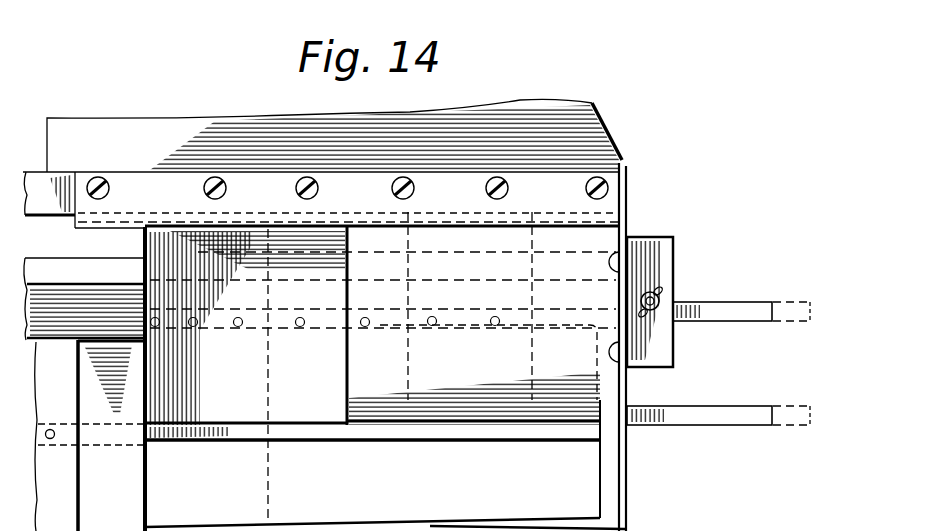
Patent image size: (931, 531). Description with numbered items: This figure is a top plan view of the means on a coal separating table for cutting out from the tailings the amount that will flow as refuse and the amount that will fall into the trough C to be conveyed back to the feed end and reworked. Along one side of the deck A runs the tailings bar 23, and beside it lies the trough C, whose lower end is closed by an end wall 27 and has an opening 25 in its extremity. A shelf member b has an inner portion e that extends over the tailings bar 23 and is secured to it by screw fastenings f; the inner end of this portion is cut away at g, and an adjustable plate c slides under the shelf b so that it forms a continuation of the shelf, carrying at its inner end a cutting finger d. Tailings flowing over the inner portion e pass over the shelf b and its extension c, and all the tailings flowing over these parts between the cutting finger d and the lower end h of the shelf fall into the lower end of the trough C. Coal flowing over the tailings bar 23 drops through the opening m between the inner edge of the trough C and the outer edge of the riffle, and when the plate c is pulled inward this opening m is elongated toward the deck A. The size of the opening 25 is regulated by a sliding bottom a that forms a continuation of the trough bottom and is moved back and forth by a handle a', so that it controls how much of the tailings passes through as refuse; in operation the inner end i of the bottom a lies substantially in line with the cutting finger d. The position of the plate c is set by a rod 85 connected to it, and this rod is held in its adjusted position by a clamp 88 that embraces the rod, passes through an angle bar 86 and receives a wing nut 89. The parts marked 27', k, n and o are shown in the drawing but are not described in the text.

The deck A is at (150, 125).
The tailings bar 23 is at (58, 186).
The end wall 27 is at (547, 347).
The upper side wall 27' is at (638, 130).
The opening 25 is at (372, 463).
The rod 85 is at (745, 322).
The angle bar 86 is at (672, 350).
The clamp 88 is at (660, 309).
The wing nut 89 is at (660, 298).
The sliding bottom a is at (111, 435).
The handle a' is at (718, 442).
The shelf member b is at (383, 318).
The adjustable plate c is at (246, 374).
The cutting finger d is at (149, 382).
The inner portion e is at (347, 198).
The screw fastenings f is at (319, 188).
The cut-away g is at (237, 222).
The lower end of the shelf h is at (657, 520).
The inner end of the bottom i is at (149, 492).
The hatched block k is at (80, 407).
The opening m is at (84, 284).
The screw head n is at (625, 232).
The hole o is at (91, 434).
The trough C is at (49, 436).